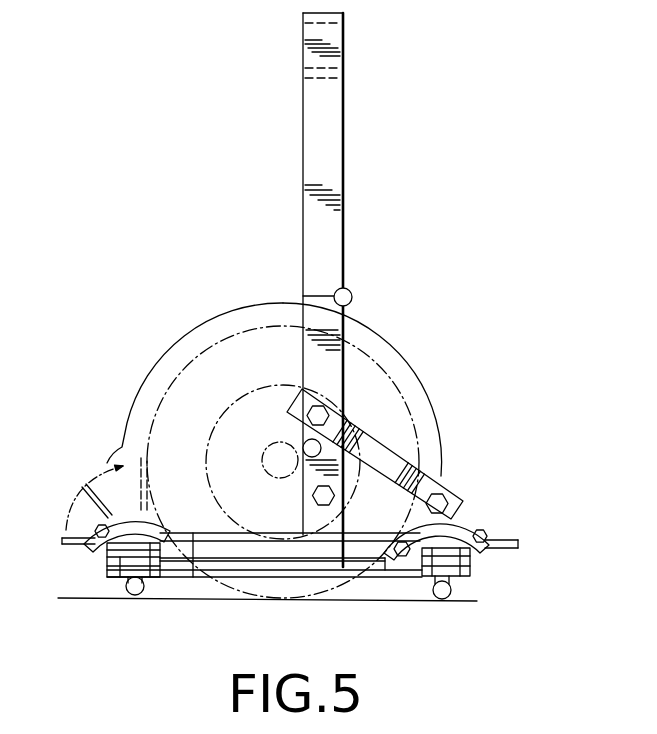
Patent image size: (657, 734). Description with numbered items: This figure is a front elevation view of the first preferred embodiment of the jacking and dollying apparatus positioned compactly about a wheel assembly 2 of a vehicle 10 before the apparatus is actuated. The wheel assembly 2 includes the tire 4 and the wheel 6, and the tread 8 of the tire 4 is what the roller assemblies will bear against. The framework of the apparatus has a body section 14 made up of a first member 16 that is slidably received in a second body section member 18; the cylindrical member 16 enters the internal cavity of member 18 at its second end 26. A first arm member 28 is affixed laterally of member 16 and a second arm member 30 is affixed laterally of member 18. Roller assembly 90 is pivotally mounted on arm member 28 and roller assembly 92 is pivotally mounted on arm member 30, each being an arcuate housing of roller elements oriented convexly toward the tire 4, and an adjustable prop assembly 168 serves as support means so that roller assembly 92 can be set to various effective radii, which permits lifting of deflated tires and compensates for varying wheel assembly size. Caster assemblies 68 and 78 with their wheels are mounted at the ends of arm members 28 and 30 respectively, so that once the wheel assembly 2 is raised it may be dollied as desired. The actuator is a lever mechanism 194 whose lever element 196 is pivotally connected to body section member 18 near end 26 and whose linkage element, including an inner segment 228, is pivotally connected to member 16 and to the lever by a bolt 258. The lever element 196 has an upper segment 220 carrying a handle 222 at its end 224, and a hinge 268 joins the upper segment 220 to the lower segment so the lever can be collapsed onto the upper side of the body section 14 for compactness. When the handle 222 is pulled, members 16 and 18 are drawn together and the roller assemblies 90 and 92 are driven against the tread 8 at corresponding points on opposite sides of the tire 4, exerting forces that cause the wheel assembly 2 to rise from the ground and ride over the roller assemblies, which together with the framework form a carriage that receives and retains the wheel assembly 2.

The lever mechanism 194 is at (346, 128).
The segment end 224 is at (340, 31).
The handle 222 is at (288, 74).
The upper segment 220 is at (303, 147).
The lever element 196 is at (303, 206).
The hinge 268 is at (352, 296).
The tire 4 is at (225, 389).
The wheel 6 is at (263, 438).
The tread 8 is at (169, 366).
The vehicle 10 is at (408, 364).
The wheel assembly 2 is at (436, 456).
The bolt 258 is at (323, 407).
The inner segment 228 is at (390, 453).
The adjustable prop assembly 168 is at (426, 481).
The roller assembly 90 is at (491, 531).
The first arm member 28 is at (478, 554).
The caster assembly 68 is at (459, 587).
The second arm member 30 is at (95, 549).
The roller assembly 92 is at (84, 548).
The caster assembly 78 is at (112, 586).
The second end 26 is at (344, 533).
The second body section member 18 is at (250, 557).
The first member 16 is at (367, 554).
The body section 14 is at (305, 583).